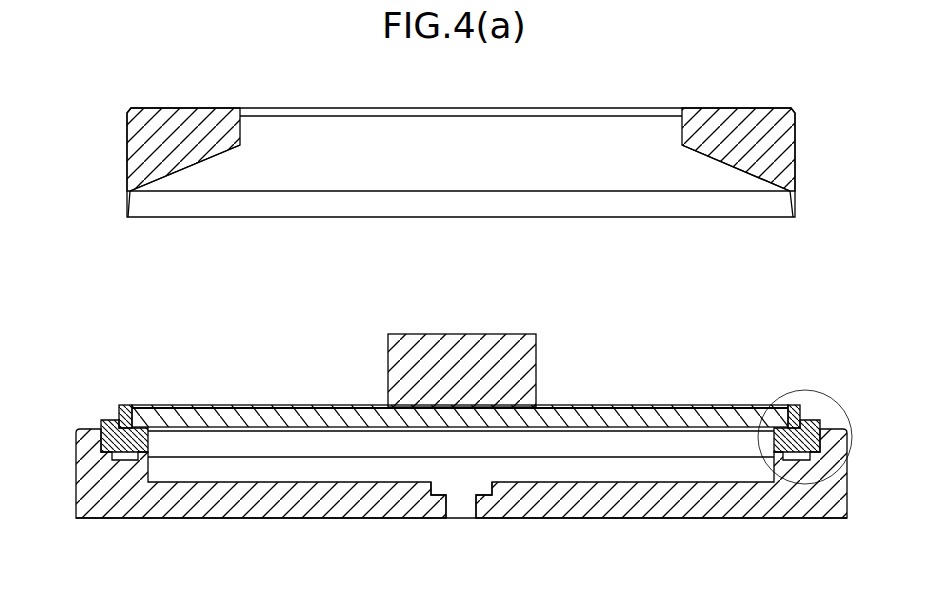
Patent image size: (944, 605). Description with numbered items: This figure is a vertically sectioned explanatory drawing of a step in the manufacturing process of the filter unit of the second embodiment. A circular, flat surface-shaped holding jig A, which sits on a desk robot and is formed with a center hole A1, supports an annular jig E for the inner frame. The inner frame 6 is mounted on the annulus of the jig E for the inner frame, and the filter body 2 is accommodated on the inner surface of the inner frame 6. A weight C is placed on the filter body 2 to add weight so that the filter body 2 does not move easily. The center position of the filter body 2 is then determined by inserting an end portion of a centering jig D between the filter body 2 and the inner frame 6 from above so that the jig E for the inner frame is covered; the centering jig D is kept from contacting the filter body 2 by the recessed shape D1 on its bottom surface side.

The centering jig D is at (745, 120).
The recessed shape D1 is at (740, 170).
The holding jig A is at (130, 519).
The center hole A1 is at (467, 508).
The jig for the inner frame E is at (108, 440).
The filter body 2 is at (210, 413).
The inner frame 6 is at (120, 415).
The weight C is at (508, 343).